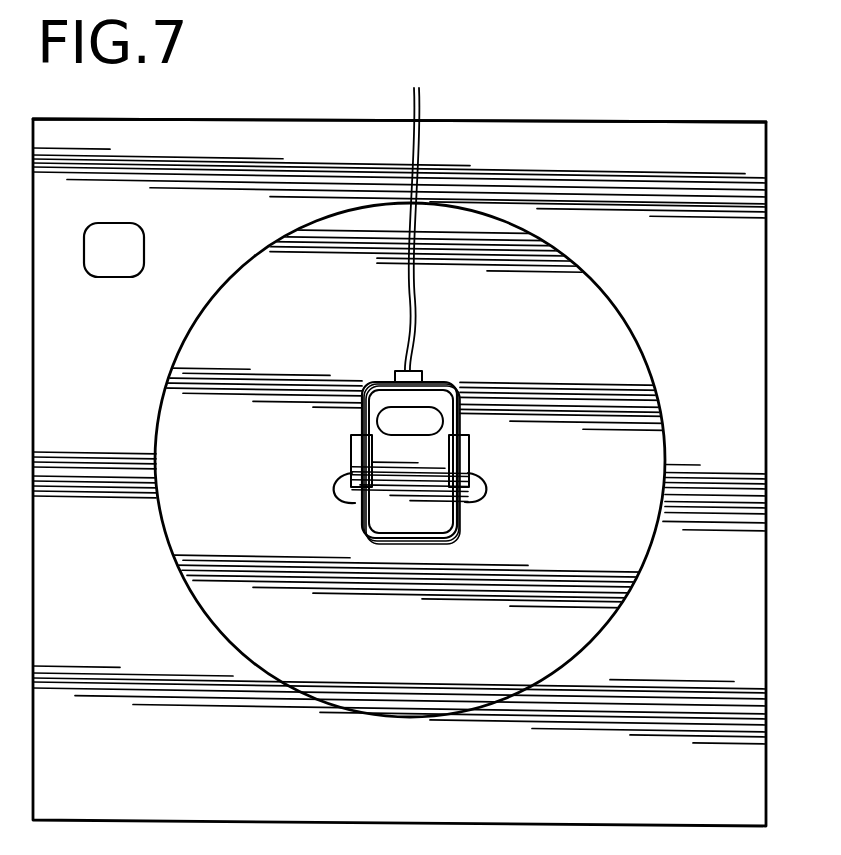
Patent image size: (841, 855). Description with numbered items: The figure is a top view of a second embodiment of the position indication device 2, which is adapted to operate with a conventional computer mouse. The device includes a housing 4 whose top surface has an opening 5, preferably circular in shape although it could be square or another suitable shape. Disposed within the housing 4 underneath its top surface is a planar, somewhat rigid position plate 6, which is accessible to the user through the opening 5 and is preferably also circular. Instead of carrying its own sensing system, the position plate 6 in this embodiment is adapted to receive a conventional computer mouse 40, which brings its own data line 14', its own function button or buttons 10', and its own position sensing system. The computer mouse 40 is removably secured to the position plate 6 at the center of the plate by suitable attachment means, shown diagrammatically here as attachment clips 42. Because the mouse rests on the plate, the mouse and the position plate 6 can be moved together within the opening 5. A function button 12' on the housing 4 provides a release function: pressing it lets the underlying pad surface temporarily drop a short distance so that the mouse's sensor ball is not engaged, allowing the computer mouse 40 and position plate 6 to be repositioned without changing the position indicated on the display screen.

The position indication device 2 is at (270, 115).
The housing 4 is at (318, 119).
The opening 5 is at (573, 262).
The position plate 6 is at (479, 257).
The function button 10' is at (469, 444).
The function button 12' is at (123, 200).
The data line 14' is at (449, 213).
The computer mouse 40 is at (466, 378).
The attachment clips 42 is at (462, 500).